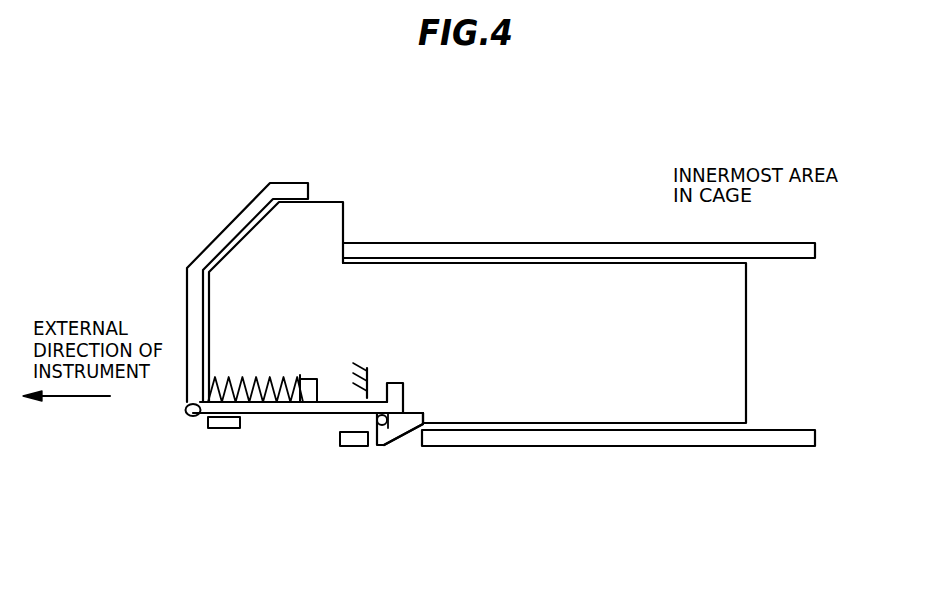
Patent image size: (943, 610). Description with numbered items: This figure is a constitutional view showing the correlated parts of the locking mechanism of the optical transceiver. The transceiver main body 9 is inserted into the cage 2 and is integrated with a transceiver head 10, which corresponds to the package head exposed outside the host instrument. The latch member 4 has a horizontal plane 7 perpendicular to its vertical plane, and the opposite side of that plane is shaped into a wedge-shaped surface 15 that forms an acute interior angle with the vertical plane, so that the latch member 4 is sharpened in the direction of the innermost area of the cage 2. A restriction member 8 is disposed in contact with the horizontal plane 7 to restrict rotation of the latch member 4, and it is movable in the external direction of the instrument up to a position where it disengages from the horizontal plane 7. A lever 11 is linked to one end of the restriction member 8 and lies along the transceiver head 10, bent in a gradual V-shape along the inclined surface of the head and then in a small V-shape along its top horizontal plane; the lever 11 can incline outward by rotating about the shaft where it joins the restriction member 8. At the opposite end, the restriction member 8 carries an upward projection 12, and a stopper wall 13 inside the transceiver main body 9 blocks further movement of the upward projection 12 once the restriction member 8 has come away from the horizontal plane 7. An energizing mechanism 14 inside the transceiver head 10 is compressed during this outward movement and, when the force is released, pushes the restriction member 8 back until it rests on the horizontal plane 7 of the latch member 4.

The cage 2 is at (313, 468).
The latch member 4 is at (389, 445).
The horizontal plane 7 is at (413, 414).
The restriction member 8 is at (240, 426).
The transceiver main body 9 is at (585, 283).
The transceiver head 10 is at (318, 224).
The lever 11 is at (213, 237).
The upward projection 12 is at (402, 383).
The stopper wall 13 is at (367, 370).
The energizing mechanism 14 is at (214, 383).
The wedge-shaped surface 15 is at (407, 442).